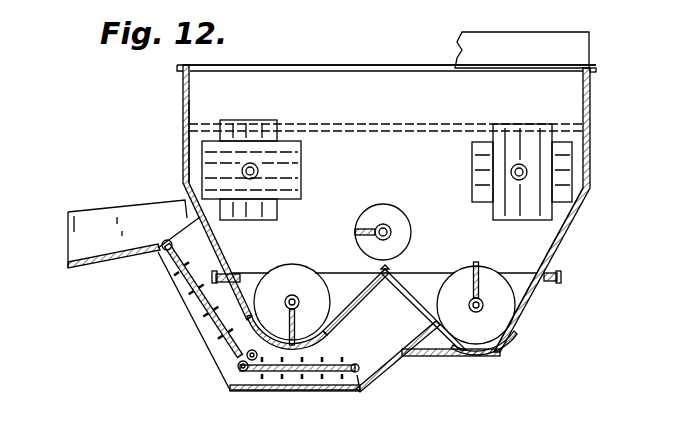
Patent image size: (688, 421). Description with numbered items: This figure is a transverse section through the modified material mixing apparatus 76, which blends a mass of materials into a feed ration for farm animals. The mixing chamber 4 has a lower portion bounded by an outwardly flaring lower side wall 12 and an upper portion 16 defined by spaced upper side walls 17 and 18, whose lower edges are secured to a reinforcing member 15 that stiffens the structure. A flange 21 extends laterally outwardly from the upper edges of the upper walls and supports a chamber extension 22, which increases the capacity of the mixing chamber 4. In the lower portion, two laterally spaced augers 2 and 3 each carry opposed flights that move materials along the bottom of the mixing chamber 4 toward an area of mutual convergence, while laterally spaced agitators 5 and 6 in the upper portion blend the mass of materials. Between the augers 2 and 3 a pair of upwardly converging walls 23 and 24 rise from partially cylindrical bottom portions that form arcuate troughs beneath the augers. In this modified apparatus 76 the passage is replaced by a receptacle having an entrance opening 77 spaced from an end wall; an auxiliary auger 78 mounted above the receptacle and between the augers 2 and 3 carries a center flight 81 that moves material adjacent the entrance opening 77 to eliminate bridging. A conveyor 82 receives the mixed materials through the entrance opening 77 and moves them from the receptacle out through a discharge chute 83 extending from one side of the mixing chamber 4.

The auger 2 is at (300, 290).
The auger 3 is at (481, 300).
The mixing chamber 4 is at (387, 158).
The agitator 5 is at (300, 181).
The agitator 6 is at (481, 181).
The lower side wall 12 is at (515, 337).
The reinforcing member 15 is at (553, 272).
The upper portion 16 is at (180, 107).
The upper side wall 17 is at (186, 138).
The upper side wall 18 is at (591, 143).
The flange 21 is at (182, 68).
The chamber extension 22 is at (559, 37).
The upwardly converging wall 23 is at (368, 283).
The upwardly converging wall 24 is at (404, 285).
The modified material mixing apparatus 76 is at (614, 63).
The entrance opening 77 is at (383, 322).
The auxiliary auger 78 is at (385, 222).
The center flight 81 is at (409, 229).
The conveyor 82 is at (215, 337).
The discharge chute 83 is at (87, 249).